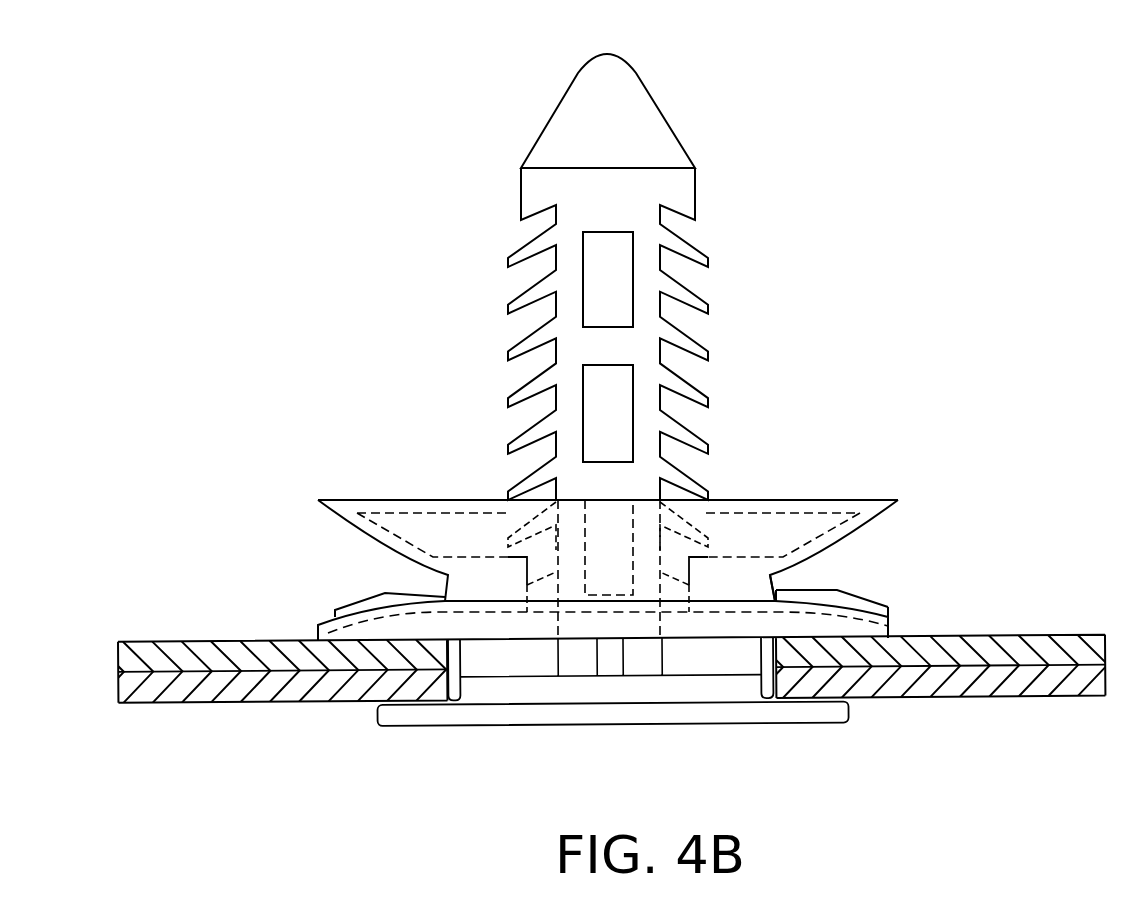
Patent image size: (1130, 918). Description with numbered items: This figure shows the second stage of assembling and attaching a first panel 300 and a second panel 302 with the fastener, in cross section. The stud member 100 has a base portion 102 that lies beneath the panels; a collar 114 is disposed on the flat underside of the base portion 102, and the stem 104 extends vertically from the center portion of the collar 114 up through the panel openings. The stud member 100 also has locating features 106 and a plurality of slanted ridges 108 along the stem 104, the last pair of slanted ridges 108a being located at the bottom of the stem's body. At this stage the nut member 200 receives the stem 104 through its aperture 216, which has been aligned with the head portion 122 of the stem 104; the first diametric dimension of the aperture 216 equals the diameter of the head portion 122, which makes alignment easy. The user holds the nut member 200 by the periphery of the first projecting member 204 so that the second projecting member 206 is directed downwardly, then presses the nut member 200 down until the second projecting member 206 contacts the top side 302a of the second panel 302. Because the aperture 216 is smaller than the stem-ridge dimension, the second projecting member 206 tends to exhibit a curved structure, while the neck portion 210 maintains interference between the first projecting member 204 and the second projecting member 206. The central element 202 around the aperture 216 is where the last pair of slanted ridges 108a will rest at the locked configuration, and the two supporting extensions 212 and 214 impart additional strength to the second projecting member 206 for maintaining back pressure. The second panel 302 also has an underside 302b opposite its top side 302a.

The stud member 100 is at (610, 401).
The base portion 102 is at (792, 712).
The stem 104 is at (630, 404).
The locating features 106 is at (497, 662).
The slanted ridges 108 is at (515, 256).
The last pair of slanted ridges 108a is at (510, 558).
The collar 114 is at (627, 690).
The head portion 122 is at (594, 108).
The nut member 200 is at (608, 600).
The central element 202 is at (525, 567).
The first projecting member 204 is at (375, 503).
The second projecting member 206 is at (323, 636).
The neck portion 210 is at (778, 574).
The supporting extension 212 is at (385, 597).
The supporting extension 214 is at (890, 618).
The aperture 216 is at (784, 578).
The first panel 300 is at (576, 671).
The second panel 302 is at (577, 671).
The top side 302a is at (230, 641).
The second surface 302b is at (286, 705).